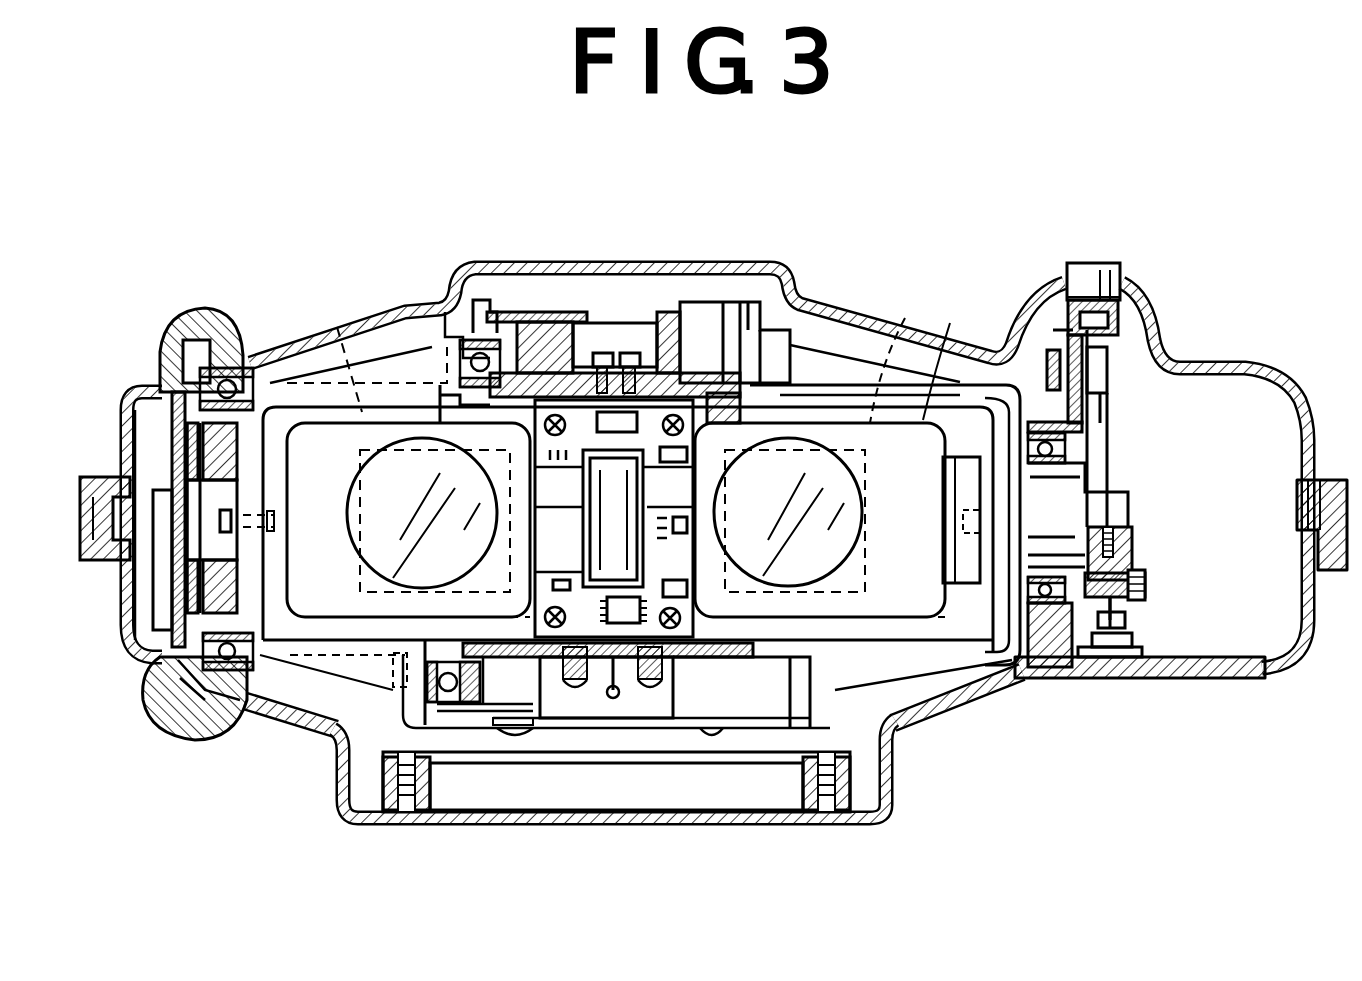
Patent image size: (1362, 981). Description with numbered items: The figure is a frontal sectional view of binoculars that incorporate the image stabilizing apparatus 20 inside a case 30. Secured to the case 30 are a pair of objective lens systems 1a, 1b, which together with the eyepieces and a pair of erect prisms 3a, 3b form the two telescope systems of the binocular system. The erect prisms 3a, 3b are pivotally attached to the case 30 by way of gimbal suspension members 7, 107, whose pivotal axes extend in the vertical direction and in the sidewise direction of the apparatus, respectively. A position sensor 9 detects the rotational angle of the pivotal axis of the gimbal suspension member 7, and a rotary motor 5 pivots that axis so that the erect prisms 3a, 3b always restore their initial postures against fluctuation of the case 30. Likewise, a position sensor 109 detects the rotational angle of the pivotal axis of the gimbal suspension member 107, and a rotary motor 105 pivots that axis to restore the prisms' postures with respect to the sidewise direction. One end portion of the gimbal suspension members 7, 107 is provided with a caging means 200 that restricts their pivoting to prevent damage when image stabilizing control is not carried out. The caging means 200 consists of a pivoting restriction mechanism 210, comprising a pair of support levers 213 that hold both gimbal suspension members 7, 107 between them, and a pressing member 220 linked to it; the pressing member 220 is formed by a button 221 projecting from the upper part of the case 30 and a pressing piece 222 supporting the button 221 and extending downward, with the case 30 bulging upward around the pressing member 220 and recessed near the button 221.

The objective lens system 1a is at (356, 527).
The objective lens system 1b is at (870, 525).
The erect prism 3a is at (330, 326).
The erect prism 3b is at (890, 330).
The rotary motor 5 is at (160, 557).
The gimbal suspension member 7 is at (842, 393).
The position sensor 9 is at (1125, 627).
The image stabilizing apparatus 20 is at (543, 296).
The case 30 is at (1233, 363).
The rotary motor 105 is at (616, 318).
The gimbal suspension member 107 is at (943, 392).
The position sensor 109 is at (573, 694).
The caging means 200 is at (1110, 407).
The pivoting restriction mechanism 210 is at (1032, 366).
The support lever 213 is at (975, 438).
The pressing member 220 is at (1182, 269).
The button 221 is at (1096, 275).
The pressing piece 222 is at (1122, 318).